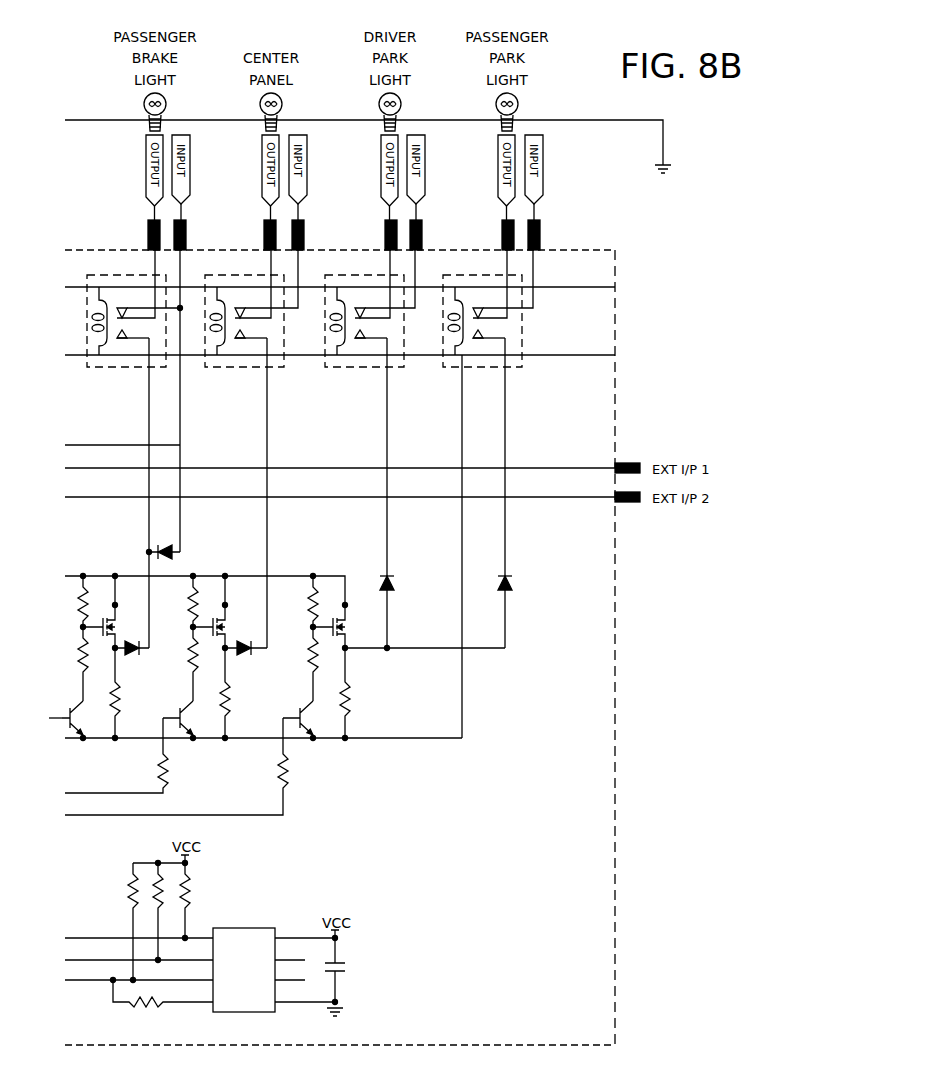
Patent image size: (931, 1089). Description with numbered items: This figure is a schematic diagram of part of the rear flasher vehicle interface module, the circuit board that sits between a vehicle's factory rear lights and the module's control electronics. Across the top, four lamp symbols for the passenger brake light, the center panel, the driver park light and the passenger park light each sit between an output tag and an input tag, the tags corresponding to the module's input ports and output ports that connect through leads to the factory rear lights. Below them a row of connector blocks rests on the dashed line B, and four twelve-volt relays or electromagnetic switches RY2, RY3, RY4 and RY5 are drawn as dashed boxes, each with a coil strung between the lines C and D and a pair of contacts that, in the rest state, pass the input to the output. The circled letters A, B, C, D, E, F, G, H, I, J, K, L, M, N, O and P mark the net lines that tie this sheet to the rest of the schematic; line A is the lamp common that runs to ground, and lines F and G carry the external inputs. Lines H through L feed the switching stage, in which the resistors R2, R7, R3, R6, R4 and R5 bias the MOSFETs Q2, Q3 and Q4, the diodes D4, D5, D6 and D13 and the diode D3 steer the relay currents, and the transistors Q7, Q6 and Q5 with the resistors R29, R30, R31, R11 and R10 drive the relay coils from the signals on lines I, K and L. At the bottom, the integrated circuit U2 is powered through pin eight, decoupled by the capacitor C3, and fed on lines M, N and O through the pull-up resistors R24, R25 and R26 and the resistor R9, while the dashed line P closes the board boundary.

The bus line A (lamp common) A is at (351, 140).
The bus line B (connector boundary) B is at (323, 250).
The bus line C (relay coil supply) C is at (323, 287).
The bus line D (relay coil return) D is at (323, 355).
The bus line E is at (103, 433).
The bus line F (external input 1) F is at (321, 468).
The bus line G (external input 2) G is at (321, 498).
The bus line H is at (186, 586).
The bus line I is at (42, 713).
The bus line J (ground return) J is at (242, 740).
The bus line K is at (92, 790).
The bus line L is at (152, 812).
The bus line M is at (116, 927).
The bus line N is at (116, 957).
The bus line O is at (116, 987).
The bus line P (board boundary) P is at (317, 1043).
The relay RY2 (passenger brake light) RY2 is at (135, 449).
The relay RY3 (center panel) RY3 is at (251, 449).
The relay RY4 (driver park light) RY4 is at (370, 449).
The relay RY5 (passenger park light) RY5 is at (488, 449).
The diode D3 is at (164, 544).
The diode D4 is at (139, 654).
The diode D5 is at (250, 654).
The diode D6 is at (400, 580).
The diode D13 is at (522, 580).
The resistor R2 is at (93, 603).
The resistor R3 is at (183, 603).
The resistor R4 is at (302, 603).
The resistor R5 is at (302, 654).
The resistor R6 is at (183, 654).
The resistor R7 is at (93, 654).
The resistor R9 is at (163, 1001).
The resistor R10 is at (298, 770).
The resistor R11 is at (178, 770).
The resistor R24 is at (201, 904).
The resistor R25 is at (170, 915).
The resistor R26 is at (119, 925).
The resistor R29 is at (129, 698).
The resistor R30 is at (239, 698).
The resistor R31 is at (360, 698).
The MOSFET Q2 is at (111, 612).
The MOSFET Q3 is at (221, 612).
The MOSFET Q4 is at (342, 631).
The transistor Q5 is at (310, 712).
The transistor Q6 is at (190, 712).
The transistor Q7 is at (85, 706).
The integrated circuit U2 is at (266, 961).
The capacitor C3 is at (347, 970).